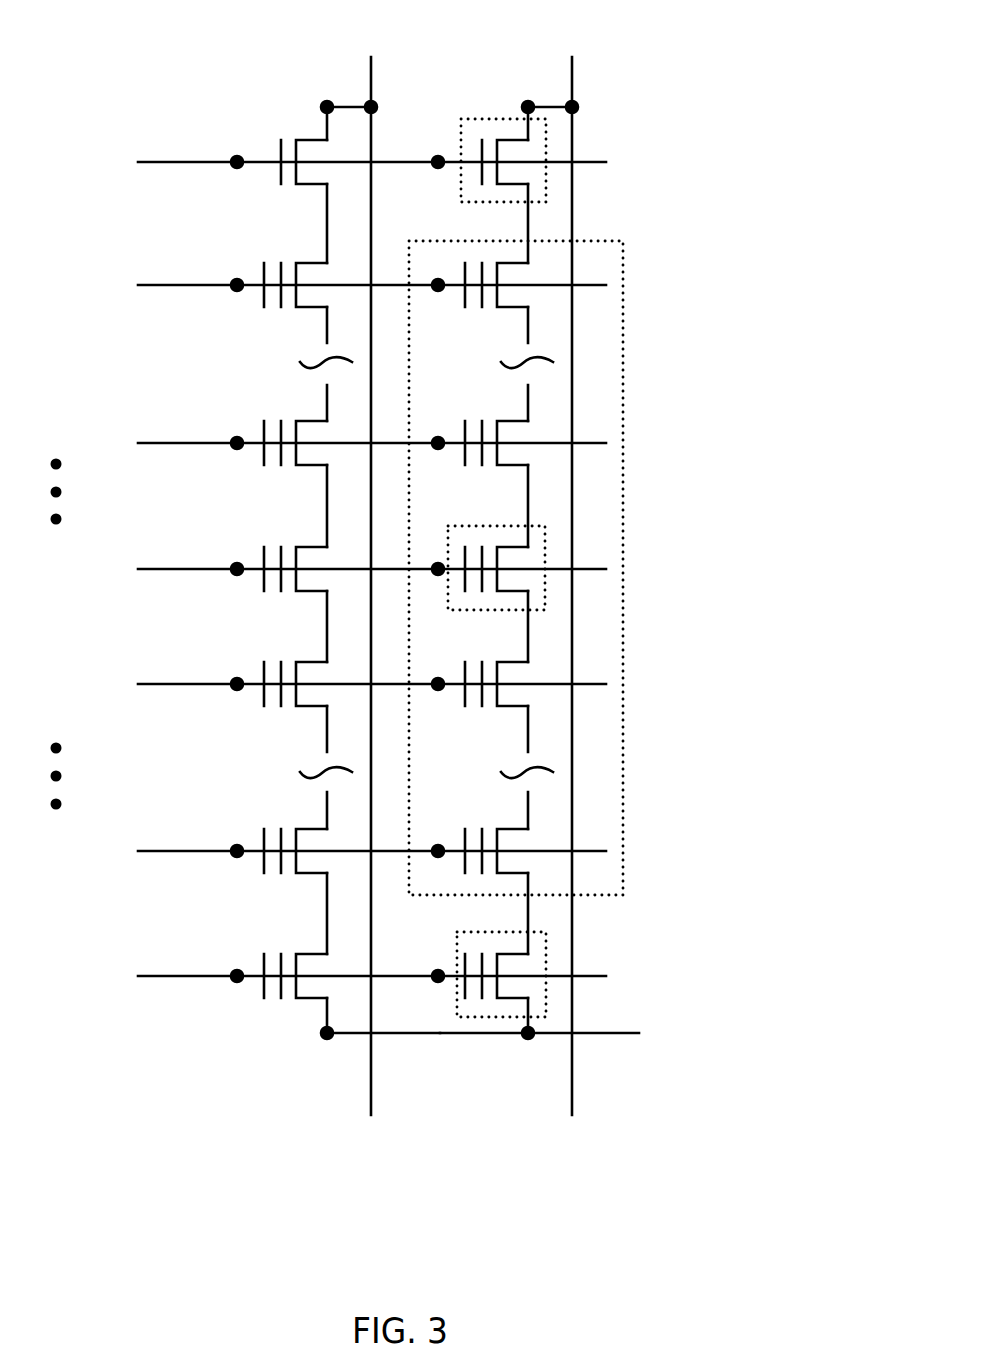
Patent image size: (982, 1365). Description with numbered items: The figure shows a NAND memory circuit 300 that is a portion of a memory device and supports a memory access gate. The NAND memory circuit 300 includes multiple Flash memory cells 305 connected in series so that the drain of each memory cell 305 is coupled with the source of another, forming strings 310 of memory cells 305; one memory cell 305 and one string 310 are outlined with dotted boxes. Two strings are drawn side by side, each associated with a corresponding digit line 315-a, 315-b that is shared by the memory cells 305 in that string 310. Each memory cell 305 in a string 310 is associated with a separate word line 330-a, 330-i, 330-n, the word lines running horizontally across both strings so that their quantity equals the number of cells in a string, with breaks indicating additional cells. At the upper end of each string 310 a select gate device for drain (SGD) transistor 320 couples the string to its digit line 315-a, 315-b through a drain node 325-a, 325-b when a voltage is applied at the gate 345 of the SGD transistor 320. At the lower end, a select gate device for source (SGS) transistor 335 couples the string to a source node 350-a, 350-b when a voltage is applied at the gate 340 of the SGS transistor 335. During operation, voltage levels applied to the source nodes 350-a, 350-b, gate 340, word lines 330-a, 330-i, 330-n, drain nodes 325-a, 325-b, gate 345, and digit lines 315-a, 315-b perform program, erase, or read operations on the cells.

The NAND memory circuit 300 is at (437, 655).
The Flash memory cell 305 is at (545, 550).
The string of memory cells 310 is at (623, 430).
The digit line 315-a is at (371, 68).
The digit line 315-b is at (572, 68).
The select gate device for drain (SGD) transistor 320 is at (546, 143).
The drain node 325-a is at (328, 107).
The drain node 325-b is at (529, 107).
The word line 330-a is at (180, 283).
The word line 330-i is at (180, 567).
The word line 330-n is at (180, 849).
The select gate device for source (SGS) transistor 335 is at (546, 957).
The gate of SGS transistor 340 is at (180, 974).
The gate of SGD transistor 345 is at (180, 160).
The source node 350-a is at (327, 1033).
The source node 350-b is at (528, 1033).